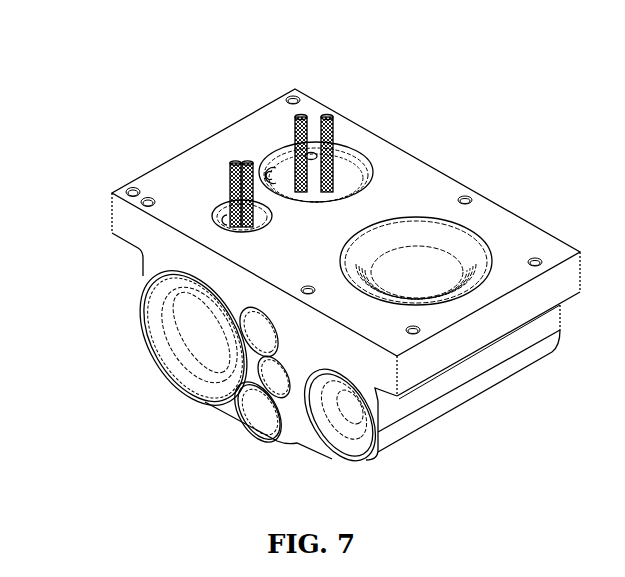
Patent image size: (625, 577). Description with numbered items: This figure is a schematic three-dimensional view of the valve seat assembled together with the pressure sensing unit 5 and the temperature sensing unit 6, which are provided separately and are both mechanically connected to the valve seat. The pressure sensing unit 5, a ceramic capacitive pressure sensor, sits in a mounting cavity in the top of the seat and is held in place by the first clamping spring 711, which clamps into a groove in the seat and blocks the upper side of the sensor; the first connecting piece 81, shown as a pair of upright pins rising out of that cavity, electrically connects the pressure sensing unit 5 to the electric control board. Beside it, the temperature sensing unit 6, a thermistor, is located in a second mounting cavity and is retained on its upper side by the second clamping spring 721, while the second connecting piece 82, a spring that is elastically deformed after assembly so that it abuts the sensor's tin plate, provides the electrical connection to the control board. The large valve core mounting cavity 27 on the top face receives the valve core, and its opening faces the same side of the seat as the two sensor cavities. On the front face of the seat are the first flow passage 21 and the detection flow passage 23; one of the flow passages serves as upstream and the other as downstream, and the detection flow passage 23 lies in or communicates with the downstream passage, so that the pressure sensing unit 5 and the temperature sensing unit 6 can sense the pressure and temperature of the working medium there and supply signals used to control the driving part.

The pressure sensing unit 5 is at (343, 173).
The temperature sensing unit 6 is at (217, 210).
The first flow passage 21 is at (347, 408).
The detection flow passage 23 is at (200, 337).
The valve core mounting cavity 27 is at (425, 288).
The first connecting piece 81 is at (328, 133).
The second connecting piece 82 is at (233, 175).
The first clamping spring 711 is at (263, 170).
The second clamping spring 721 is at (217, 212).